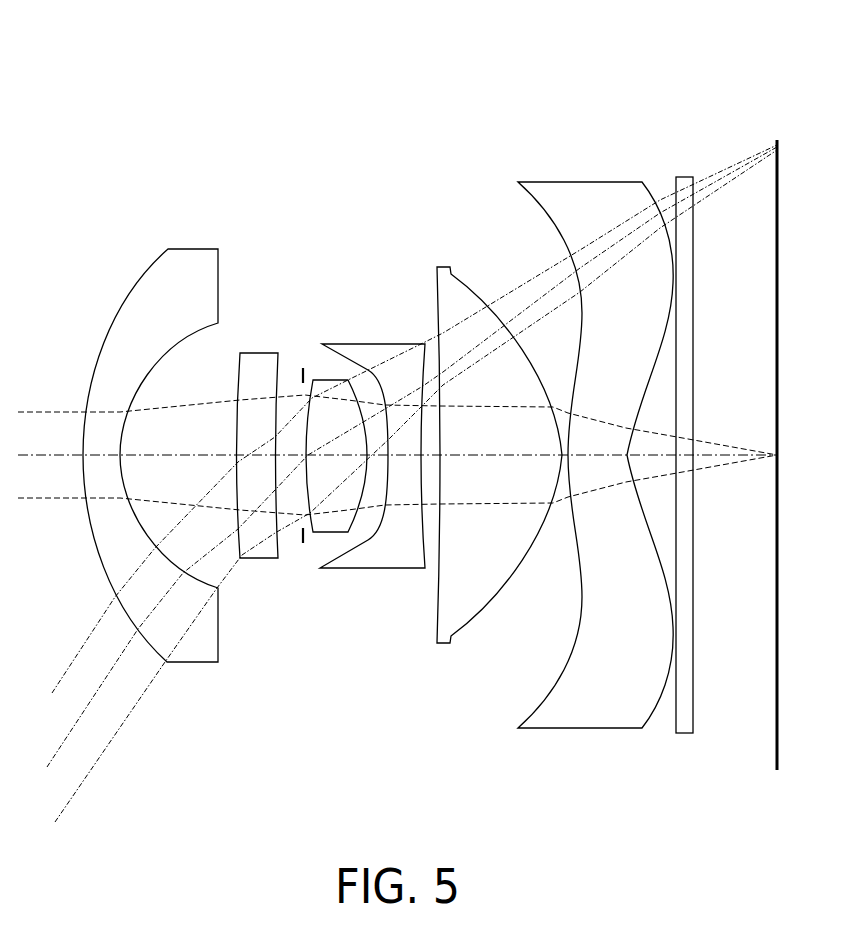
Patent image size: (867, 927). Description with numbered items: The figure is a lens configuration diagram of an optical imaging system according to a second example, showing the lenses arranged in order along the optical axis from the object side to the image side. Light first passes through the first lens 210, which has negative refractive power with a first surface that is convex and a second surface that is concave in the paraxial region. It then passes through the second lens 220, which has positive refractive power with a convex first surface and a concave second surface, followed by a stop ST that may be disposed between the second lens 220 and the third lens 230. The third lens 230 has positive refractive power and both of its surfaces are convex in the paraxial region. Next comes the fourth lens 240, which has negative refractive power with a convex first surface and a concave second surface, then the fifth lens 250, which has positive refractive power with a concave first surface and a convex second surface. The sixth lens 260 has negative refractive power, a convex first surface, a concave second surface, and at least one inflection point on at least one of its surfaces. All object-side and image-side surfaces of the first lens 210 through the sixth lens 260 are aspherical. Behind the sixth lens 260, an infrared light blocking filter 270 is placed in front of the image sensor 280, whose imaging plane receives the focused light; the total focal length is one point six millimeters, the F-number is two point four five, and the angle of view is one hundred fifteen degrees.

The first lens 210 is at (182, 257).
The second lens 220 is at (254, 357).
The third lens 230 is at (308, 375).
The fourth lens 240 is at (363, 350).
The fifth lens 250 is at (446, 272).
The sixth lens 260 is at (563, 190).
The infrared light blocking filter 270 is at (680, 177).
The image sensor 280 is at (778, 138).
The stop ST is at (302, 547).